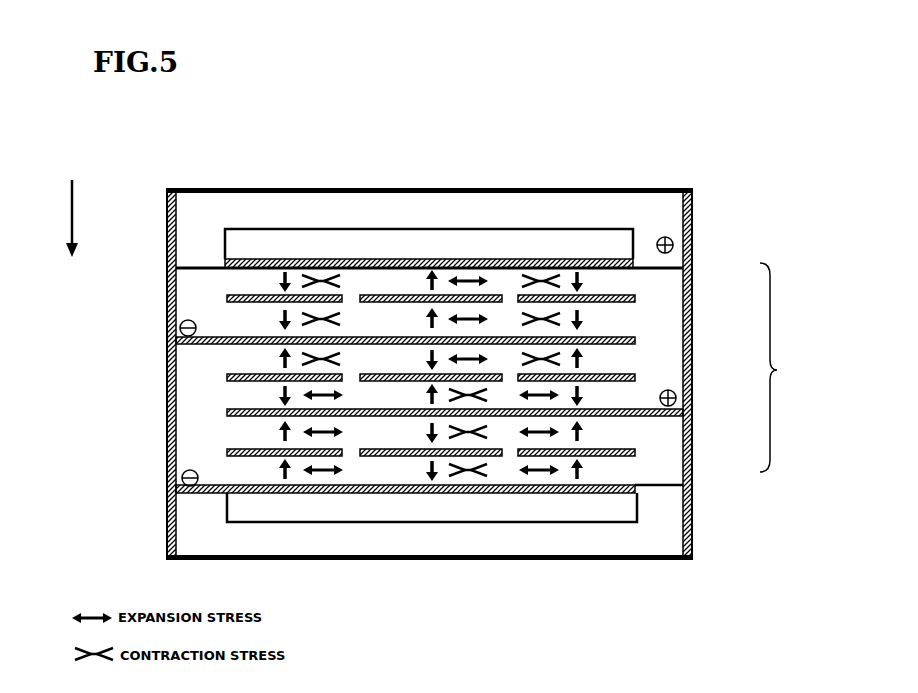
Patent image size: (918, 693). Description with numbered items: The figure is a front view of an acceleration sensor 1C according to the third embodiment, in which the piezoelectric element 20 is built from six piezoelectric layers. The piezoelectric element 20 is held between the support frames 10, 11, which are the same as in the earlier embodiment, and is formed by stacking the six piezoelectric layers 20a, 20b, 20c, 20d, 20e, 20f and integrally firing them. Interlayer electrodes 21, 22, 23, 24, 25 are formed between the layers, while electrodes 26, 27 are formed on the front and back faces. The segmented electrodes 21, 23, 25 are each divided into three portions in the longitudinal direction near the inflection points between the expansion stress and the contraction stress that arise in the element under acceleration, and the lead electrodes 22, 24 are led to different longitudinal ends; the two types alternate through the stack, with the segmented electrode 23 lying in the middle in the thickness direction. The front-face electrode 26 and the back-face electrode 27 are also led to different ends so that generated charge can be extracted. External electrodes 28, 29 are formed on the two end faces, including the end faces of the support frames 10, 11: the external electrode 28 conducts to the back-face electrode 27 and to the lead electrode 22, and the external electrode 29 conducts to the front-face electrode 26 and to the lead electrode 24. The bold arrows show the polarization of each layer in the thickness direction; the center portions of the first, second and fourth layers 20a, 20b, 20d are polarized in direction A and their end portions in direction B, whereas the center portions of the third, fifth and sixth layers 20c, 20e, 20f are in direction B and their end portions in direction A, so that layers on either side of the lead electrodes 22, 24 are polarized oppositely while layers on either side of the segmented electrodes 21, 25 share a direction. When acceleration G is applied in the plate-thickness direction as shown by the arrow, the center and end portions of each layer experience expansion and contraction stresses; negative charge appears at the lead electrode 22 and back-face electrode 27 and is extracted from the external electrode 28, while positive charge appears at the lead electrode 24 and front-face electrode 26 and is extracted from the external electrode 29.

The acceleration sensor 1C is at (594, 162).
The support frame 10 is at (506, 198).
The support frame 11 is at (485, 552).
The piezoelectric element 20 is at (786, 367).
The first piezoelectric layer 20a is at (627, 282).
The second piezoelectric layer 20b is at (623, 318).
The third piezoelectric layer 20c is at (625, 355).
The fourth piezoelectric layer 20d is at (627, 392).
The fifth piezoelectric layer 20e is at (627, 428).
The sixth piezoelectric layer 20f is at (625, 467).
The segmented electrode 21 is at (225, 298).
The lead electrode 22 is at (205, 346).
The segmented electrode 23 is at (227, 378).
The lead electrode 24 is at (227, 415).
The segmented electrode 25 is at (227, 455).
The front-face electrode 26 is at (348, 259).
The back-face electrode 27 is at (360, 493).
The external electrode 28 is at (167, 230).
The external electrode 29 is at (692, 218).
The polarization direction A is at (422, 283).
The polarization direction B is at (280, 268).
The acceleration G is at (59, 218).